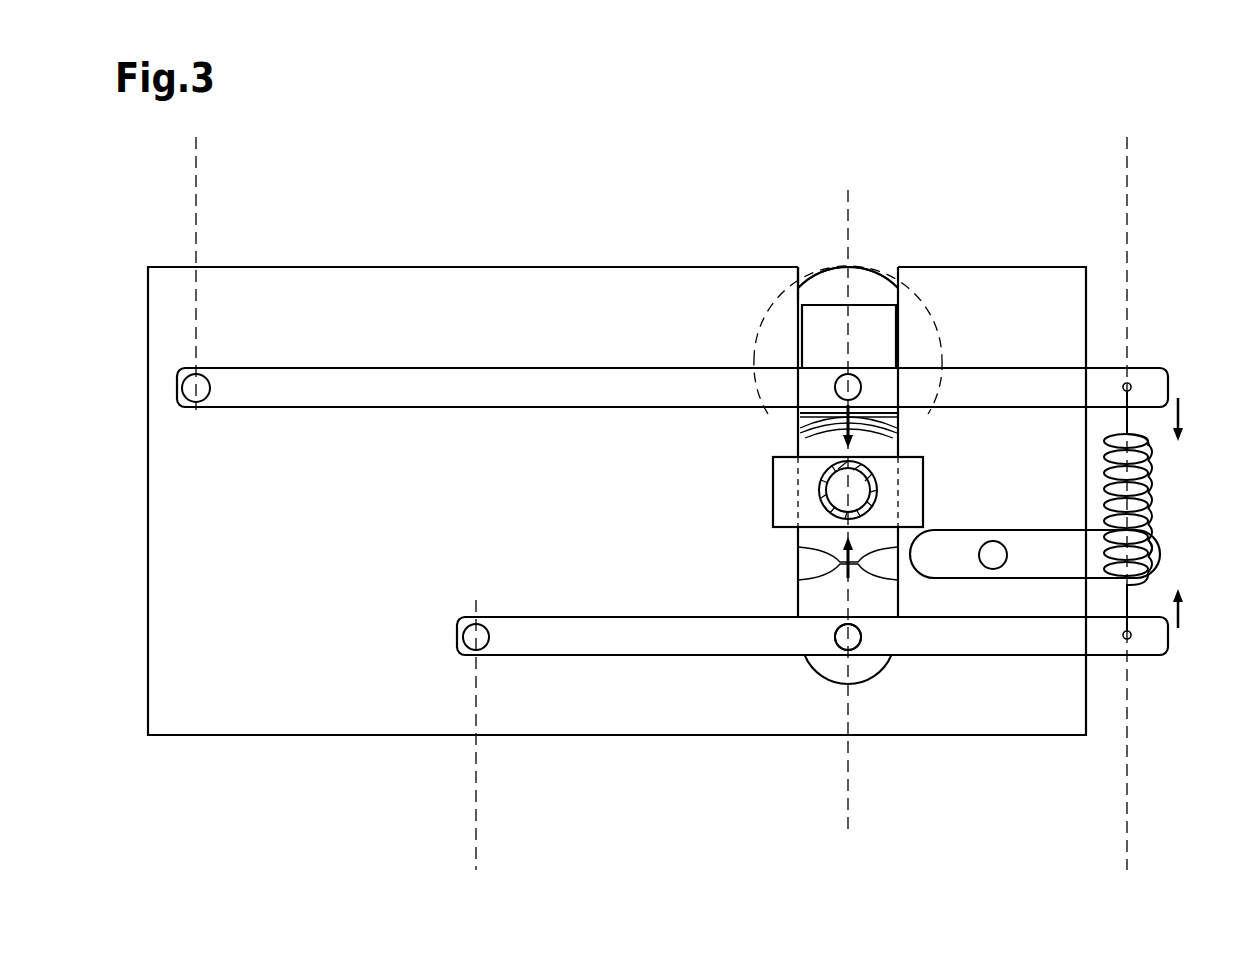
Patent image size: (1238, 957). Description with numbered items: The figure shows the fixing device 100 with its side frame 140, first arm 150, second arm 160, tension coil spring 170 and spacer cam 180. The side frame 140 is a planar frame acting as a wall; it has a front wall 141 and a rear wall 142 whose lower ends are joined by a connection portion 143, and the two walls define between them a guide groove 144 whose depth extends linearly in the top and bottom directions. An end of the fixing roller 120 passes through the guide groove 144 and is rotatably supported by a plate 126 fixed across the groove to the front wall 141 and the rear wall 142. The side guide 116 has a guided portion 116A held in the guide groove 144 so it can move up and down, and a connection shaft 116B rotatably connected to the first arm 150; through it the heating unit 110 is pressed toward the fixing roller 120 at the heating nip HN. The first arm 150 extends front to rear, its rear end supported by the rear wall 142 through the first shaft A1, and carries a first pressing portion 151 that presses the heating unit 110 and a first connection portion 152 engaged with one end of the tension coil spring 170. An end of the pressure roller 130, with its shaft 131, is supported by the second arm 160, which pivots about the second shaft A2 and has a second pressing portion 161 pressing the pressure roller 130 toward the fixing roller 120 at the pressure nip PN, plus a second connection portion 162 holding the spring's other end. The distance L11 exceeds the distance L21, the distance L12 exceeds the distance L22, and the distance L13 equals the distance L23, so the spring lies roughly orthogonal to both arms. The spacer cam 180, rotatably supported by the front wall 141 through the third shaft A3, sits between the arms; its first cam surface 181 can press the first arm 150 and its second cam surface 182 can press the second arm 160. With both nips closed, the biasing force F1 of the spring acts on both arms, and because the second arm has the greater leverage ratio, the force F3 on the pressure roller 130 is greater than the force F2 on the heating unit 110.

The fixing device 100 is at (168, 226).
The heating unit 110 is at (864, 250).
The side guide 116 is at (830, 267).
The guided portion 116A is at (873, 305).
The connection shaft 116B is at (858, 382).
The fixing roller 120 is at (810, 443).
The plate 126 is at (915, 472).
The pressure roller 130 is at (835, 675).
The pin 131 is at (858, 647).
The side frame 140 is at (1003, 260).
The front wall 141 is at (1062, 311).
The rear wall 142 is at (597, 308).
The connection portion 143 is at (878, 710).
The guide groove 144 is at (798, 290).
The first arm 150 is at (481, 358).
The first pressing portion 151 is at (838, 382).
The first connection portion 152 is at (1130, 383).
The second arm 160 is at (718, 668).
The second pressing portion 161 is at (838, 648).
The second connection portion 162 is at (1131, 641).
The tension coil spring 170 is at (1152, 468).
The spacer cam 180 is at (1046, 537).
The first cam surface 181 is at (1158, 548).
The second cam surface 182 is at (913, 583).
The first shaft A1 is at (200, 402).
The second shaft A2 is at (476, 625).
The third shaft A3 is at (995, 541).
The biasing force F1 is at (1193, 513).
The force pressing the heating unit F2 is at (870, 430).
The force pressing the pressure roller F3 is at (820, 562).
The heated nozzle region HN is at (810, 434).
The pinched nozzle PN is at (830, 570).
The distance between first shaft and first pressing portion L11 is at (848, 197).
The distance between first shaft and first connection portion L12 is at (1127, 150).
The distance between first pressing portion and first connection portion L13 is at (1127, 197).
The distance between second shaft and second pressing portion L21 is at (848, 807).
The distance between second shaft and second connection portion L22 is at (1127, 853).
The distance between second pressing portion and second connection portion L23 is at (1127, 807).